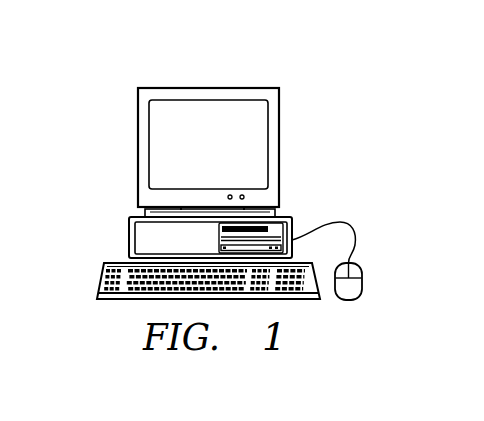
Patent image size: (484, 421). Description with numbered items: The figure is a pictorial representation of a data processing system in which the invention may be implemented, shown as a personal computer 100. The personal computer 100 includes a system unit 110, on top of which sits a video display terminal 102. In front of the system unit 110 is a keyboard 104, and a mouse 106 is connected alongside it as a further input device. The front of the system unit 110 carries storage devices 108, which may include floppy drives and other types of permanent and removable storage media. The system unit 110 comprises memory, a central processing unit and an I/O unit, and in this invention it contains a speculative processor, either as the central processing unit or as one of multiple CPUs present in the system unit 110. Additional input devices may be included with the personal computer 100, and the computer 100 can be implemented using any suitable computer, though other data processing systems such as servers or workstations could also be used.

The personal computer 100 is at (231, 65).
The video display terminal 102 is at (138, 146).
The keyboard 104 is at (102, 277).
The mouse 106 is at (362, 282).
The storage devices 108 is at (262, 227).
The system unit 110 is at (129, 240).